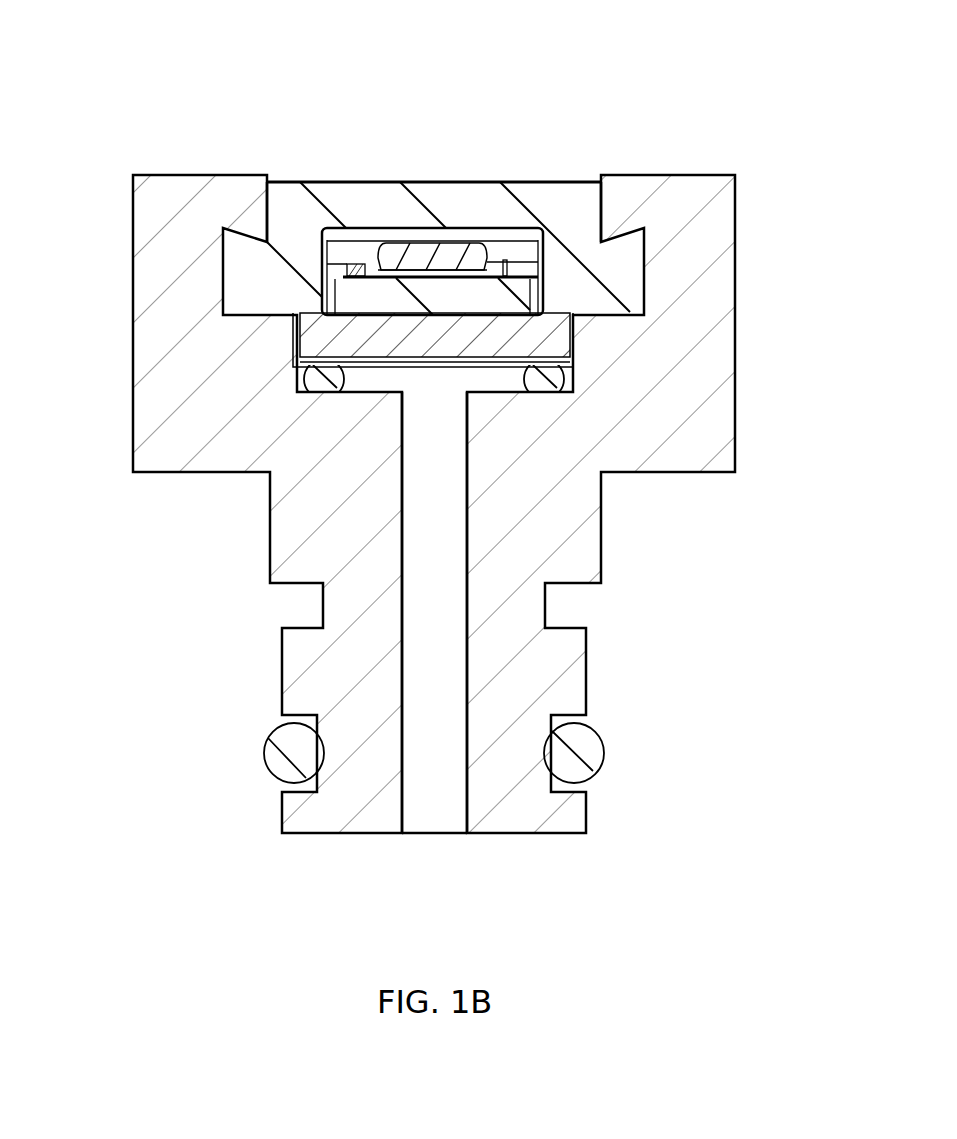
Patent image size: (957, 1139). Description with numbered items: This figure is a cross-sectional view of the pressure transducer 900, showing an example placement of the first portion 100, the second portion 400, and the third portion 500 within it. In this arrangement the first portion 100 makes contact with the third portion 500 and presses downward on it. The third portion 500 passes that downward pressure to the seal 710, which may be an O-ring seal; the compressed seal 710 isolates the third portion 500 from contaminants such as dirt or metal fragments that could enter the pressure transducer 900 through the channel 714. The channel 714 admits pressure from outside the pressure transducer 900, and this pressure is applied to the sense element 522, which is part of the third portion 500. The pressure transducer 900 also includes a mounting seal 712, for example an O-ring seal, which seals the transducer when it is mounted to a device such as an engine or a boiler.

The pressure transducer 900 is at (673, 55).
The first portion 100 is at (457, 195).
The second portion 400 is at (663, 188).
The third portion 500 is at (387, 292).
The sense element 522 is at (545, 330).
The seal 710 is at (330, 376).
The mounting seal 712 is at (297, 755).
The channel 714 is at (438, 698).